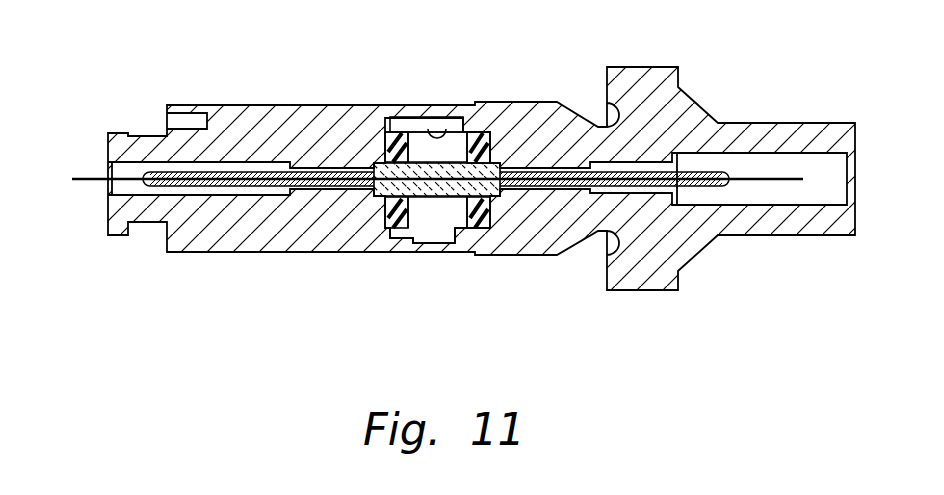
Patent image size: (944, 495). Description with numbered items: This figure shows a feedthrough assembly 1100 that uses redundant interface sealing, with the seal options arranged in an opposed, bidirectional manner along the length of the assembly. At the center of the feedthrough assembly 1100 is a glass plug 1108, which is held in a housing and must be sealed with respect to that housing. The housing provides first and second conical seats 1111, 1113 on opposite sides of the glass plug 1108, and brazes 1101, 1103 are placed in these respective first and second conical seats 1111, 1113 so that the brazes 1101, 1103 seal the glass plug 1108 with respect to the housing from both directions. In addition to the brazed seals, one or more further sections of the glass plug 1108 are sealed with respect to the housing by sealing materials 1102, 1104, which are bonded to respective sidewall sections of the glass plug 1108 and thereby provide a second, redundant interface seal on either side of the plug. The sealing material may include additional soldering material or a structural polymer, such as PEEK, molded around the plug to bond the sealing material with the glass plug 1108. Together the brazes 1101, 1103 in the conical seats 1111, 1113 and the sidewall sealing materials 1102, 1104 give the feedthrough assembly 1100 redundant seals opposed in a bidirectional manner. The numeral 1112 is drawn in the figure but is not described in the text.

The feedthrough assembly 1100 is at (186, 49).
The braze 1101 is at (488, 200).
The sealing material 1102 is at (490, 164).
The braze 1103 is at (384, 200).
The sealing material 1104 is at (384, 166).
The glass plug 1108 is at (435, 198).
The first conical seat 1111 is at (463, 165).
The vent groove 1112 is at (403, 166).
The second conical seat 1113 is at (418, 142).